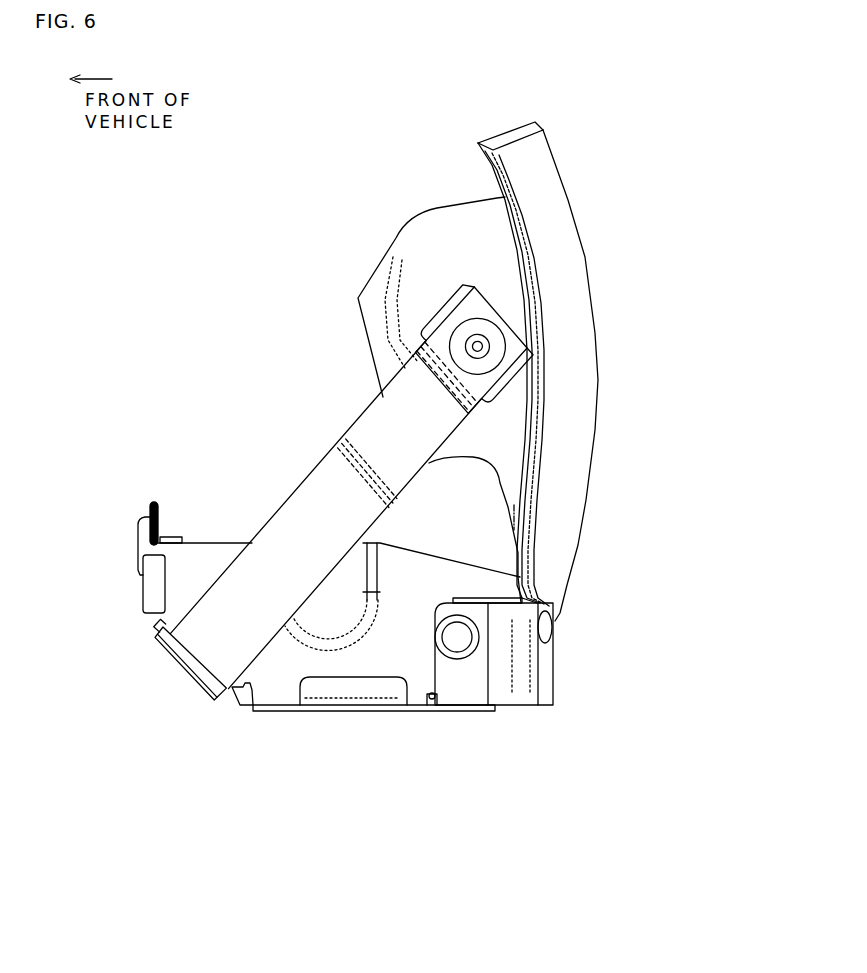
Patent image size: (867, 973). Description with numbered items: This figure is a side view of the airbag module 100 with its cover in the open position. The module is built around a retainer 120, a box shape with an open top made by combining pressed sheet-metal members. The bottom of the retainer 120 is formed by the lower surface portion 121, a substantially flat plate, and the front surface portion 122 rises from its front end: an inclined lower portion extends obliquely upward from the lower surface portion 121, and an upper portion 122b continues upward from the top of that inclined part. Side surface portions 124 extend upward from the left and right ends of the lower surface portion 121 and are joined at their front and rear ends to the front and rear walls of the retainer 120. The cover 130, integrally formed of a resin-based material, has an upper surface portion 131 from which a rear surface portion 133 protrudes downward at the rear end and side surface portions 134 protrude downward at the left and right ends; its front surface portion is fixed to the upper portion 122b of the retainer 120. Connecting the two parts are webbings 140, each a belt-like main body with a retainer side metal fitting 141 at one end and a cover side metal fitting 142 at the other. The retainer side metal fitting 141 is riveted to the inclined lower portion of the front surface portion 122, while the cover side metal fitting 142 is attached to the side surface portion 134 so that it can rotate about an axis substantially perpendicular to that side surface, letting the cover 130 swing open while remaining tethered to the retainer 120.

The airbag module 100 is at (152, 212).
The retainer 120 is at (455, 725).
The lower surface portion 121 is at (363, 710).
The front surface portion 122 is at (240, 690).
The upper portion 122b is at (160, 615).
The side surface portions 124 is at (285, 668).
The cover 130 is at (607, 187).
The upper surface portion 131 is at (586, 264).
The rear surface portion 133 is at (550, 657).
The side surface portions 134 is at (413, 262).
The webbings 140 is at (303, 492).
The retainer side metal fitting 141 is at (177, 667).
The cover side metal fitting 142 is at (441, 316).